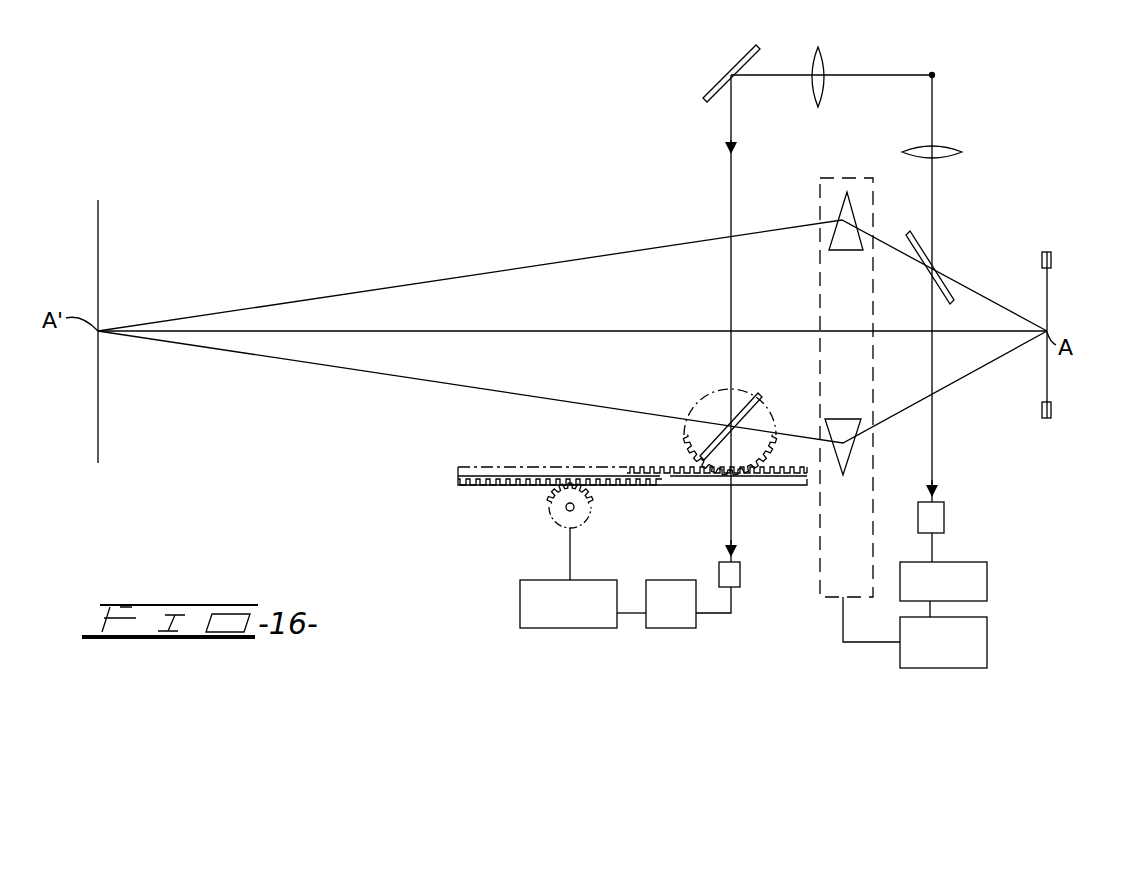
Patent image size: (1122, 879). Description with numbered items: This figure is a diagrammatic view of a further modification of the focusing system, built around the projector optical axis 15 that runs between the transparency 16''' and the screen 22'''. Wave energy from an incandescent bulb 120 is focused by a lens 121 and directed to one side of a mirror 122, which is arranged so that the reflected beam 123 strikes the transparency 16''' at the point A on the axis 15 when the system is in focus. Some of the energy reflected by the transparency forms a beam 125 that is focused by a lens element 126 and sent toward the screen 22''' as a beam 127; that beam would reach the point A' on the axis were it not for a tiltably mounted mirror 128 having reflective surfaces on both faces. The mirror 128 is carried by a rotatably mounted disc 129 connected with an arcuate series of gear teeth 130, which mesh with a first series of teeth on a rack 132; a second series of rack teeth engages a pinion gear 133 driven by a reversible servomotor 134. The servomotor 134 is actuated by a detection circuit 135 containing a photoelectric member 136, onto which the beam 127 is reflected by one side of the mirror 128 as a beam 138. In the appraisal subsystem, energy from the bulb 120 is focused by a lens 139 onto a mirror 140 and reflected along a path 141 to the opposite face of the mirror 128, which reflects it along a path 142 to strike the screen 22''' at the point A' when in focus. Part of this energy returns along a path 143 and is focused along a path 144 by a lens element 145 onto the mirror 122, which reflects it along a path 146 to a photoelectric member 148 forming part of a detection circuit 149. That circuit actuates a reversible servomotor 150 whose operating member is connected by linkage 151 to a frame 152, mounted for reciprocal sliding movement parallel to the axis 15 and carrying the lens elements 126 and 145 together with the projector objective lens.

The projector optical axis 15 is at (527, 331).
The transparency 16''' is at (1075, 335).
The screen 22''' is at (129, 331).
The incandescent bulb 120 is at (934, 76).
The lens 121 is at (945, 141).
The mirror 122 is at (912, 238).
The beam 123 is at (1004, 309).
The beam 125 is at (952, 384).
The lens element 126 is at (843, 475).
The wave energy beam 127 is at (790, 440).
The tiltably mounted mirror 128 is at (746, 395).
The disc 129 is at (708, 407).
The arcuate series of gear teeth 130 is at (688, 442).
The rack 132 is at (630, 468).
The pinion gear 133 is at (549, 512).
The reversible servomotor 134 is at (587, 617).
The detection circuit 135 is at (666, 594).
The photoelectric member 136 is at (733, 577).
The beam 138 is at (731, 515).
The lens 139 is at (822, 60).
The mirror 140 is at (726, 72).
The beam or path 141 is at (731, 212).
The beam or path 142 is at (447, 383).
The path 143 is at (365, 288).
The path 144 is at (895, 250).
The lens element 145 is at (838, 212).
The path 146 is at (932, 370).
The photoelectric member 148 is at (936, 520).
The detection circuit 149 is at (962, 594).
The reversible servomotor 150 is at (956, 654).
The linkage 151 is at (870, 645).
The frame 152 is at (818, 302).